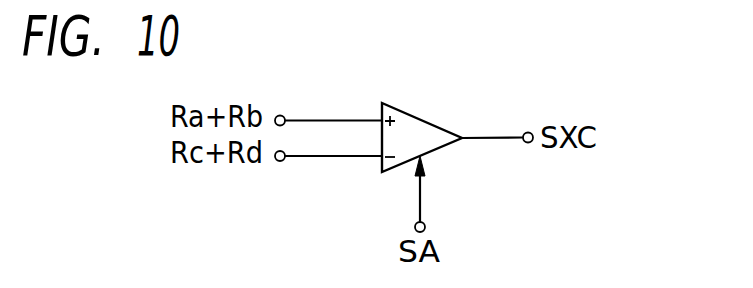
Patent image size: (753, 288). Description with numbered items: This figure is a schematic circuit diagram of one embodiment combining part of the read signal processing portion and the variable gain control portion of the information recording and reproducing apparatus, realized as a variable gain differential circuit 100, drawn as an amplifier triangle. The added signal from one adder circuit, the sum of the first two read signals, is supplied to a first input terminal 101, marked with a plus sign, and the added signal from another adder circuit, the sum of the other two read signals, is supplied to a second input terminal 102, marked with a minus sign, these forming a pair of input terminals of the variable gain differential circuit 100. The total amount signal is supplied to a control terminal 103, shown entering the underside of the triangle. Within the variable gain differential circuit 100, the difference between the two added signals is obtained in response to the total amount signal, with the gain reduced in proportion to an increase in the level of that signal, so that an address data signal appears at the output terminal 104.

The variable gain differential circuit 100 is at (413, 112).
The input terminal 101 is at (282, 116).
The input terminal 102 is at (281, 161).
The control terminal 103 is at (425, 223).
The output terminal 104 is at (525, 132).